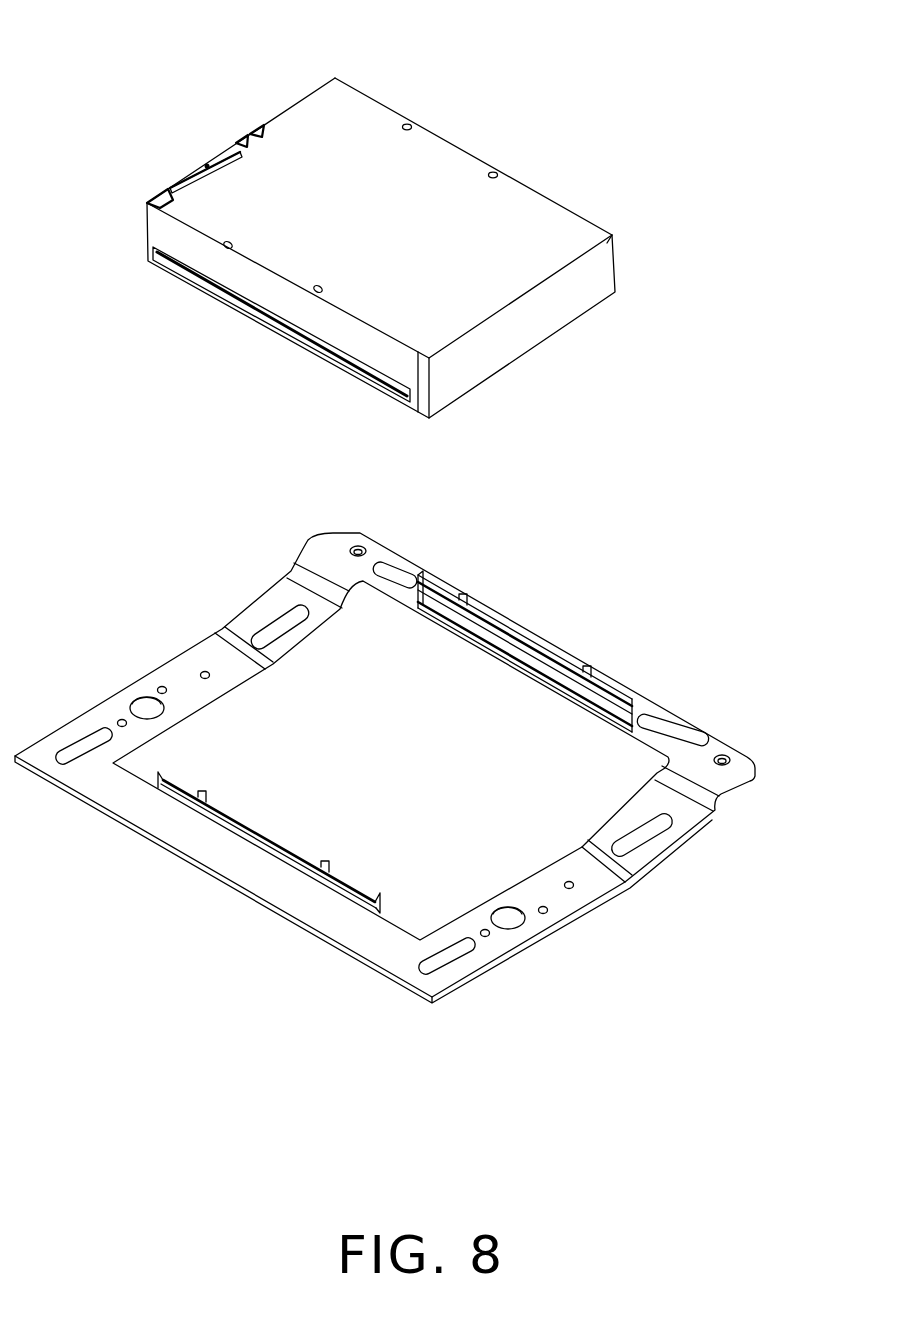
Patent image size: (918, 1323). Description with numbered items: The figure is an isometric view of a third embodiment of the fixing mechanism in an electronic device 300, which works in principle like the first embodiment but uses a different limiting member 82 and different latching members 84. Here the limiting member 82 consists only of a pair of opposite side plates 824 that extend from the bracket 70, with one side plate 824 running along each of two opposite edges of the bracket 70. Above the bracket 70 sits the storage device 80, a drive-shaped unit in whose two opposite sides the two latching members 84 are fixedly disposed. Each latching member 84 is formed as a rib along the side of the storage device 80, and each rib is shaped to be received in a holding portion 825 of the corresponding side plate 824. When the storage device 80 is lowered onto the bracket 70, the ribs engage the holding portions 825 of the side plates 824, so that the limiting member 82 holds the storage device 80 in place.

The electronic device 300 is at (205, 62).
The storage device 80 is at (538, 227).
The latching member 84 is at (220, 284).
The limiting member 82 is at (481, 557).
The bracket 70 is at (182, 687).
The side plate 824 is at (487, 623).
The holding portion 825 is at (550, 658).